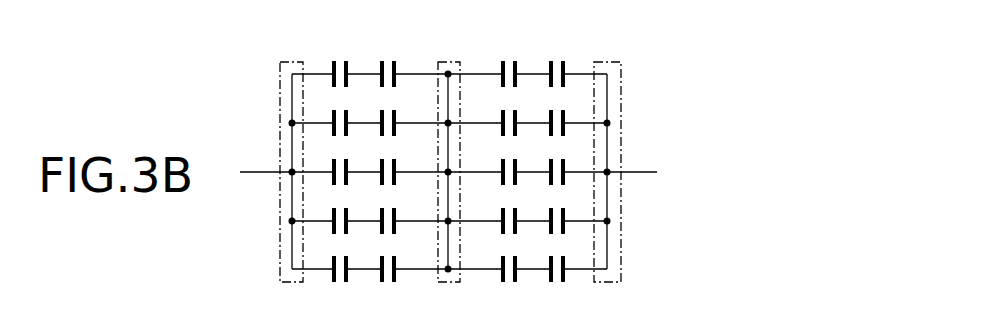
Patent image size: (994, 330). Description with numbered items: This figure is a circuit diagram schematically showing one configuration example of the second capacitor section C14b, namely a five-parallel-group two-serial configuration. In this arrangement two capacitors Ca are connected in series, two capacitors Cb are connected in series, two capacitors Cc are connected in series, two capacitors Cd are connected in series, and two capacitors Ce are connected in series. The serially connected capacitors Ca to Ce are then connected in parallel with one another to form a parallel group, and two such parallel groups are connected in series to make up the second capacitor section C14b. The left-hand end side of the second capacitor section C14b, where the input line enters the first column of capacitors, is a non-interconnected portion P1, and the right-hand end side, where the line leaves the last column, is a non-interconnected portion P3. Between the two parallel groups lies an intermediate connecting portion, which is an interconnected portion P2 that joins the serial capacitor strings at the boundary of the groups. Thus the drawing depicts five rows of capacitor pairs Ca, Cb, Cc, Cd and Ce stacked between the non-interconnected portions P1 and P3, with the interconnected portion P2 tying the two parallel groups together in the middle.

The second capacitor section C14b is at (631, 63).
The non-interconnected portion P1 is at (290, 62).
The interconnected portion P2 is at (447, 62).
The non-interconnected portion P3 is at (606, 62).
The capacitor Ca is at (449, 64).
The capacitor Cb is at (449, 113).
The capacitor Cc is at (449, 162).
The capacitor Cd is at (449, 211).
The capacitor Ce is at (449, 259).